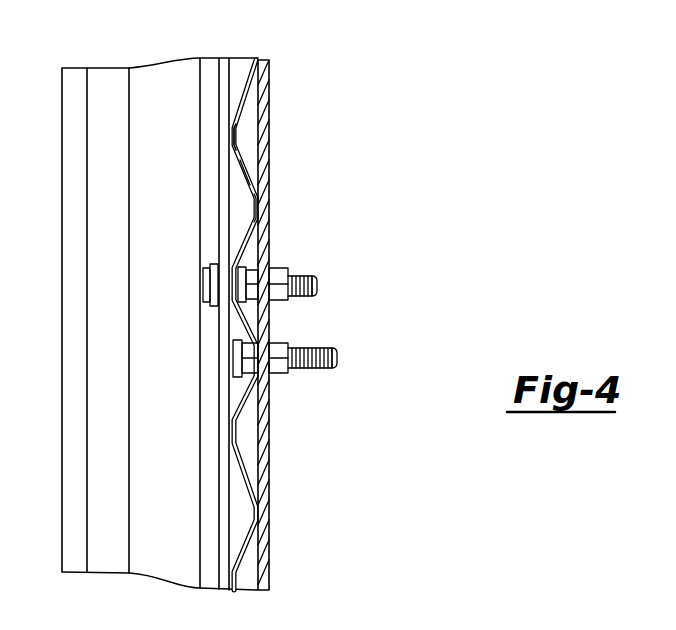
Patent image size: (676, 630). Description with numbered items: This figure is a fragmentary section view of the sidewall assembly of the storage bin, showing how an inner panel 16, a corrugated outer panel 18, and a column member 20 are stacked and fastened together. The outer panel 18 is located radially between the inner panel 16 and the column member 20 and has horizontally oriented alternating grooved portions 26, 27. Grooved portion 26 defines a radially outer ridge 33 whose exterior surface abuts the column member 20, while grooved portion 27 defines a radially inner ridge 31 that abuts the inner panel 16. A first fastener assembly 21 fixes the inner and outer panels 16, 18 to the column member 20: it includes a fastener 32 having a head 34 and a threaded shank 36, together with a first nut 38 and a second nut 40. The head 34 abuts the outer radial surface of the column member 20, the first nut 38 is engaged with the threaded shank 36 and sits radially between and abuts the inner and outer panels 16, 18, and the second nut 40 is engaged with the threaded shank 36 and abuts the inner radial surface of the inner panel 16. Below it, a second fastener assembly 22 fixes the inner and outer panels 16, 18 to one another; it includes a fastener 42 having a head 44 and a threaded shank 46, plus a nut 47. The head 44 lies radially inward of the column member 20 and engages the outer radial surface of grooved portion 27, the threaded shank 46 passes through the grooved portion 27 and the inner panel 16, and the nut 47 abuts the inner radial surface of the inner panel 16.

The inner panel 16 is at (271, 75).
The outer panel 18 is at (250, 62).
The column member 20 is at (147, 67).
The first fastener assembly 21 is at (274, 271).
The second fastener assembly 22 is at (280, 394).
The grooved portion 26 is at (238, 137).
The grooved portion 27 is at (246, 213).
The radially inner ridge 31 is at (259, 207).
The fastener 32 is at (318, 289).
The radially outer ridge 33 is at (231, 139).
The head 34 is at (204, 297).
The threaded shank 36 is at (313, 275).
The first nut 38 is at (259, 252).
The second nut 40 is at (282, 302).
The fastener 42 is at (338, 360).
The head 44 is at (234, 372).
The threaded shank 46 is at (313, 370).
The nut 47 is at (282, 374).